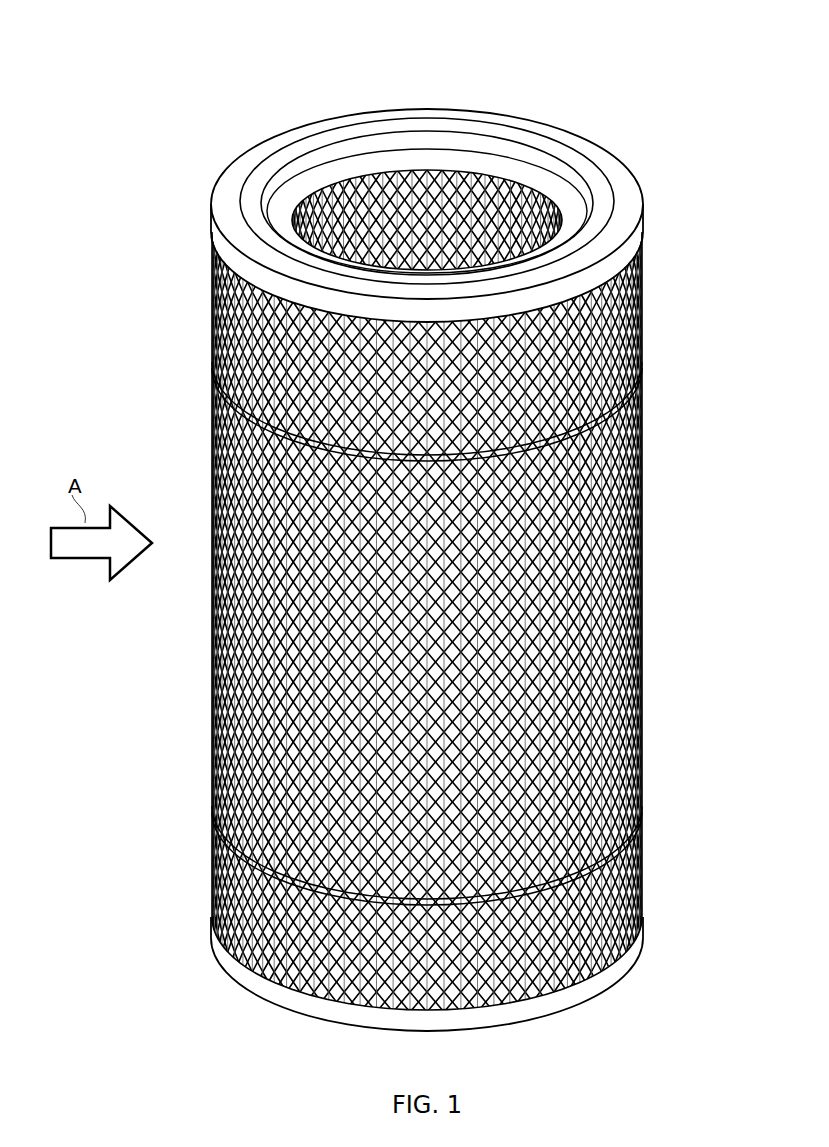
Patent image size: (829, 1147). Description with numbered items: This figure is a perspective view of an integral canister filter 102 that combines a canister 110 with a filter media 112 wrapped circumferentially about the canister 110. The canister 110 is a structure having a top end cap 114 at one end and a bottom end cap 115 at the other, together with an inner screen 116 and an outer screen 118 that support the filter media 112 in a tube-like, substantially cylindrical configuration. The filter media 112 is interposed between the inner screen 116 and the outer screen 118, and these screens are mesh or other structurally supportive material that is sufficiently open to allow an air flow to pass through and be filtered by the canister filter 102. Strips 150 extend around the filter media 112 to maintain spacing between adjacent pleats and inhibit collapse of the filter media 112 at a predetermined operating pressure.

The canister filter 102 is at (658, 100).
The canister 110 is at (260, 174).
The filter media 112 is at (642, 503).
The top end cap 114 is at (223, 208).
The bottom end cap 115 is at (243, 977).
The inner screen 116 is at (450, 172).
The outer screen 118 is at (642, 357).
The strips 150 is at (642, 405).